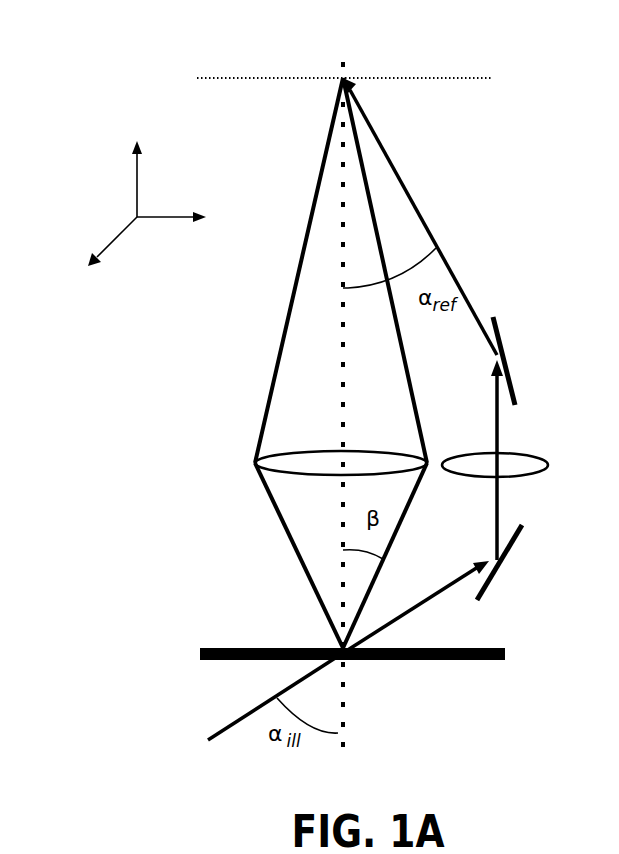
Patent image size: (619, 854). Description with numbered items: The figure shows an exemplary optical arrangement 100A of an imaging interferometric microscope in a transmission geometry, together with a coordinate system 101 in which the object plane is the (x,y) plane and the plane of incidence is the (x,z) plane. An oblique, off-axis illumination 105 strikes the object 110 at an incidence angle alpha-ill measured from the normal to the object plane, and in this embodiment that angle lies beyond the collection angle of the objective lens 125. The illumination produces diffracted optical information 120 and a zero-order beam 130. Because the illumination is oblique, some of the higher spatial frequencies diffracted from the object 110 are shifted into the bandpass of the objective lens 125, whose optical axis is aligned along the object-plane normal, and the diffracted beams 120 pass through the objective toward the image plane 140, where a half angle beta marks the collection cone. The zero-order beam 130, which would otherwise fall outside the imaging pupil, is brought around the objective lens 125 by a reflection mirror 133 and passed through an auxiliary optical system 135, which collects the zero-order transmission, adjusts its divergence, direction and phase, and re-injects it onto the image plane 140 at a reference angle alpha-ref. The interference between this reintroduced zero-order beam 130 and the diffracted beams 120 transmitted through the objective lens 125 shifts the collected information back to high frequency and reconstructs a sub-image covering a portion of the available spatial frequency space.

The optical arrangement 100A is at (379, 46).
The coordinate system 101 is at (142, 203).
The off-axis illumination 105 is at (258, 709).
The object 110 is at (375, 655).
The diffracted optical information 120 is at (290, 553).
The objective lens 125 is at (258, 456).
The zero-order beam 130 is at (422, 212).
The reflection mirror 133 is at (505, 560).
The auxiliary optical system 135 is at (537, 456).
The image plane 140 is at (370, 78).